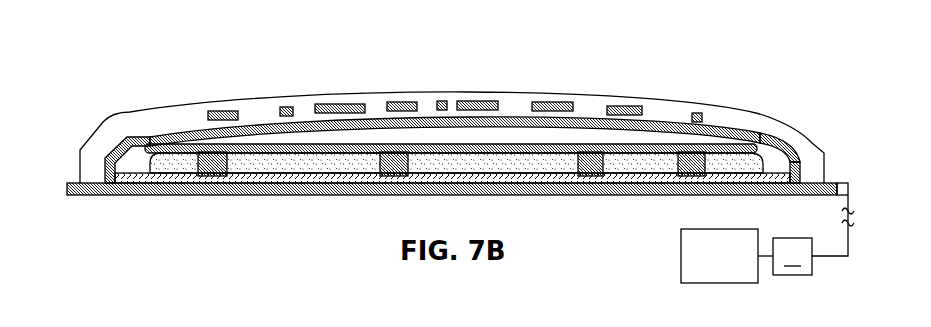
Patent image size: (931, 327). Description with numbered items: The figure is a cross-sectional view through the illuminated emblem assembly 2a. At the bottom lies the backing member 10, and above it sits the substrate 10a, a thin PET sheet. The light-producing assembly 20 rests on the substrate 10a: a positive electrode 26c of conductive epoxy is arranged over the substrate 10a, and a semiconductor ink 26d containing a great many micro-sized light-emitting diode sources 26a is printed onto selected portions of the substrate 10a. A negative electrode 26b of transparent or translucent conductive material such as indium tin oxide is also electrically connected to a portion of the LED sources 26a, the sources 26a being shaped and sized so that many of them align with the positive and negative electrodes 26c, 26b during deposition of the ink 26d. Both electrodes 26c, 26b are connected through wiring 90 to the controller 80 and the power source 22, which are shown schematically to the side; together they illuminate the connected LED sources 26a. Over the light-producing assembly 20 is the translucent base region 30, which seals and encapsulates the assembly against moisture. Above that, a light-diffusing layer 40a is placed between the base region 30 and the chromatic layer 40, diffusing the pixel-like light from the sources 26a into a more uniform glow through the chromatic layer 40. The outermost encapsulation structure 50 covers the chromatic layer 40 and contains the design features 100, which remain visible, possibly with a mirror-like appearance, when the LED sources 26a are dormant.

The illuminated emblem assembly 2a is at (168, 56).
The backing member 10 is at (78, 183).
The substrate 10a is at (118, 196).
The light-producing assembly 20 is at (132, 138).
The translucent base region 30 is at (650, 134).
The chromatic layer 40 is at (175, 133).
The light-diffusing layer 40a is at (367, 133).
The encapsulation structure 50 is at (593, 104).
The design features 100 is at (340, 103).
The micro-sized light-emitting diode sources 26a is at (213, 194).
The negative electrode 26b is at (710, 135).
The positive electrode 26c is at (790, 150).
The semiconductor ink 26d is at (762, 131).
The power source 22 is at (681, 255).
The controller 80 is at (785, 256).
The wiring 90 is at (830, 257).